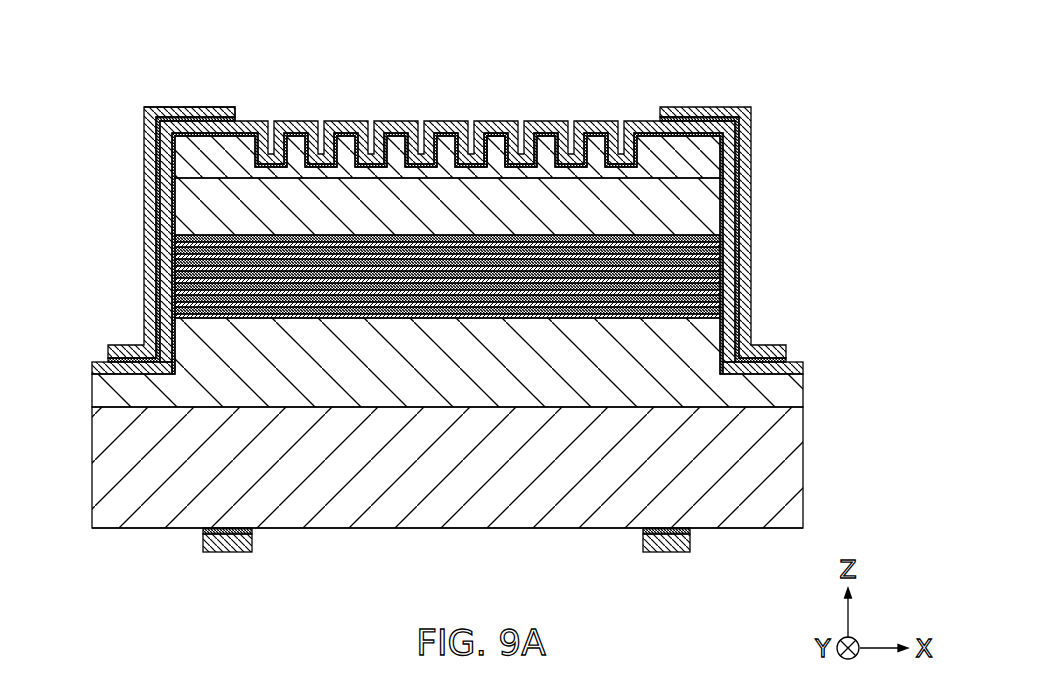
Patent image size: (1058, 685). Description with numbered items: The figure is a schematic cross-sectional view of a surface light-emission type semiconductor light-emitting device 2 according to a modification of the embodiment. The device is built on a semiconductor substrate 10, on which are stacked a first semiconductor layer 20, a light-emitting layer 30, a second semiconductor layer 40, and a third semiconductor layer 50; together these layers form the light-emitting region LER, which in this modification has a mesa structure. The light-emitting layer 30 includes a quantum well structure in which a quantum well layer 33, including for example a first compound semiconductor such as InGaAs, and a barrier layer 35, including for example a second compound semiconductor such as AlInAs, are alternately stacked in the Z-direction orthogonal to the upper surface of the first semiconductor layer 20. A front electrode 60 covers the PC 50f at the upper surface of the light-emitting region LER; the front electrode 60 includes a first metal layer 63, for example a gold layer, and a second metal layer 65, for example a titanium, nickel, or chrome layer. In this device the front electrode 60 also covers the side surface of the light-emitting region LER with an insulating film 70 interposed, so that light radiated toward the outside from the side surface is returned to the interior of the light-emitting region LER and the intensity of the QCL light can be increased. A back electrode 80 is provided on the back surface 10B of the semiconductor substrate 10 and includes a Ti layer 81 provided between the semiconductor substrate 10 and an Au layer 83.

The semiconductor light-emitting device 2 is at (440, 315).
The semiconductor substrate 10 is at (477, 514).
The back surface 10B is at (148, 533).
The first semiconductor layer 20 is at (780, 388).
The light-emitting layer 30 is at (514, 271).
The quantum well layer 33 is at (710, 280).
The barrier layer 35 is at (712, 254).
The second semiconductor layer 40 is at (693, 200).
The third semiconductor layer 50 is at (488, 114).
The PC 50f is at (500, 143).
The front electrode 60 is at (692, 98).
The first metal layer 63 is at (140, 203).
The second metal layer 65 is at (146, 257).
The insulating film 70 is at (98, 356).
The back electrode 80 is at (728, 577).
The Ti layer 81 is at (686, 540).
The Au layer 83 is at (672, 562).
The light-emitting region LER is at (210, 93).